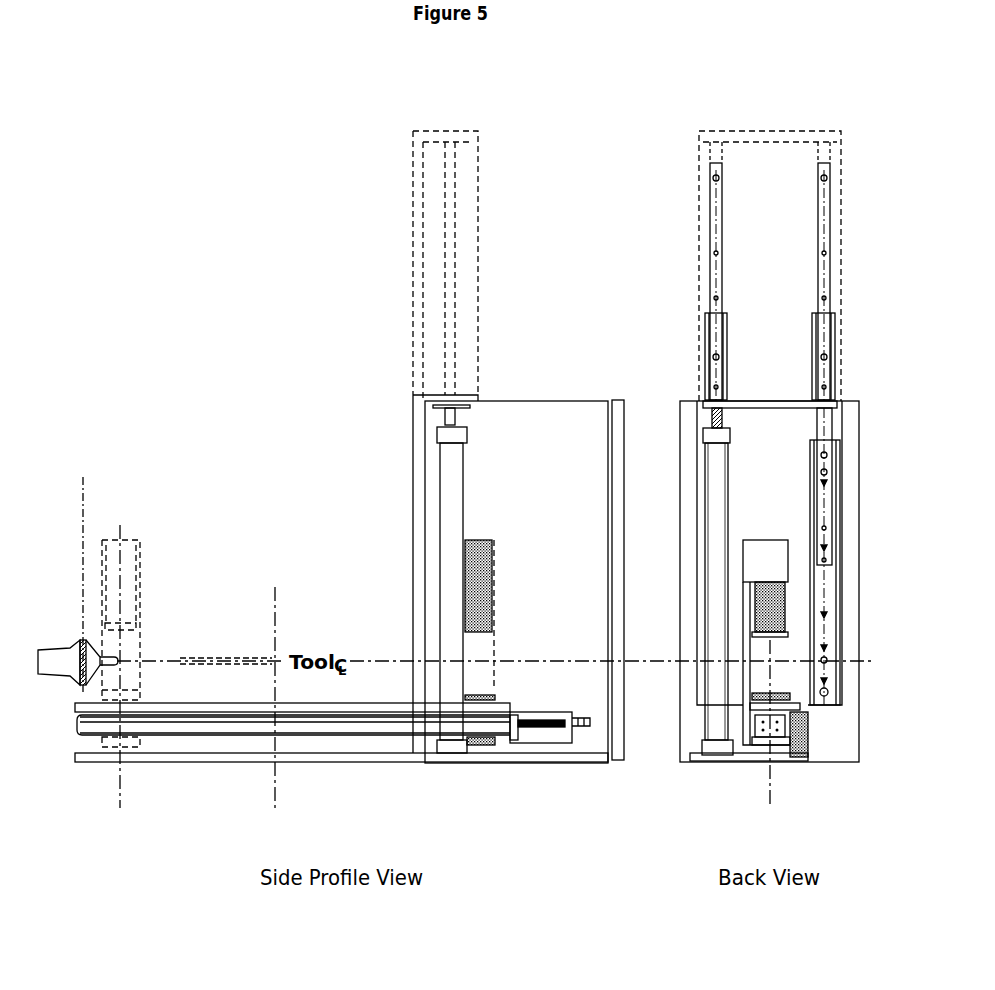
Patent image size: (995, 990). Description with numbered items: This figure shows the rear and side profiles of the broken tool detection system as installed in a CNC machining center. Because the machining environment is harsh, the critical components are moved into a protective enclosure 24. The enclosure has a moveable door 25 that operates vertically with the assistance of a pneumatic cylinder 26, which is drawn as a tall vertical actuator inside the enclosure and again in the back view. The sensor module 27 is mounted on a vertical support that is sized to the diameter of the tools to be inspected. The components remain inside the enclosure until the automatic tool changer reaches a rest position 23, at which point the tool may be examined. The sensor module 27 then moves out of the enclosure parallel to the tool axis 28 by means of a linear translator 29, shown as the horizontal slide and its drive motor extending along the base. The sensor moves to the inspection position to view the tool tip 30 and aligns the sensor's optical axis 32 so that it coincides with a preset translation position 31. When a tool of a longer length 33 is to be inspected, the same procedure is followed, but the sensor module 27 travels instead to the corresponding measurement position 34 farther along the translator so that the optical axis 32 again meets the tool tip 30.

The rest position 23 is at (85, 497).
The protective enclosure 24 is at (518, 400).
The moveable door 25 is at (763, 281).
The pneumatic cylinder 26 is at (456, 737).
The sensor module 27 is at (481, 541).
The tool axis 28 is at (642, 663).
The linear translator 29 is at (297, 740).
The tool tip 30 is at (117, 660).
The preset translation position 31 is at (122, 767).
The optical axis 32 is at (128, 553).
The longer tool length 33 is at (236, 655).
The measurement position 34 is at (276, 587).